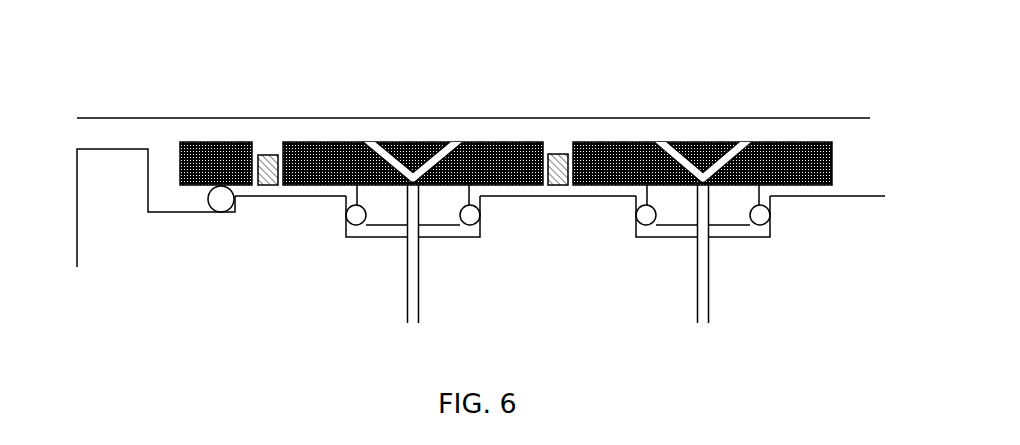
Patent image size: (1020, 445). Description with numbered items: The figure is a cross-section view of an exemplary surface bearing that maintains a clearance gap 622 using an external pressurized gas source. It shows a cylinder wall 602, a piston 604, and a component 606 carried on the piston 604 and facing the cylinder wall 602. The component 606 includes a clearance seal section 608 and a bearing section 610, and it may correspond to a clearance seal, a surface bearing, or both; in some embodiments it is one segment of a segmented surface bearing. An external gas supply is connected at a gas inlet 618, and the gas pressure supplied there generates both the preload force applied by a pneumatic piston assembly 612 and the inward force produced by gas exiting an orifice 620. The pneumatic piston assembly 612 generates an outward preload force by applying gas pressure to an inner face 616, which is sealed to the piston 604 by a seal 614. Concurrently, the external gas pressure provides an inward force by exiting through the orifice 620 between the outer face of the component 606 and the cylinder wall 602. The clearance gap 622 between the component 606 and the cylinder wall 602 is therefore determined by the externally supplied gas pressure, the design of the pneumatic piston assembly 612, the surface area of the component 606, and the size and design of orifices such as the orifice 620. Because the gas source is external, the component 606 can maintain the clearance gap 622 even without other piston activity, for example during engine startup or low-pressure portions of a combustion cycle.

The cylinder wall 602 is at (145, 118).
The piston 604 is at (83, 149).
The component 606 is at (626, 126).
The clearance seal section 608 is at (208, 141).
The bearing section 610 is at (413, 125).
The pneumatic piston assembly 612 is at (466, 243).
The seal 614 is at (358, 226).
The inner face 616 is at (449, 227).
The gas inlet 618 is at (419, 297).
The orifice 620 is at (455, 141).
The clearance gap 622 is at (181, 131).